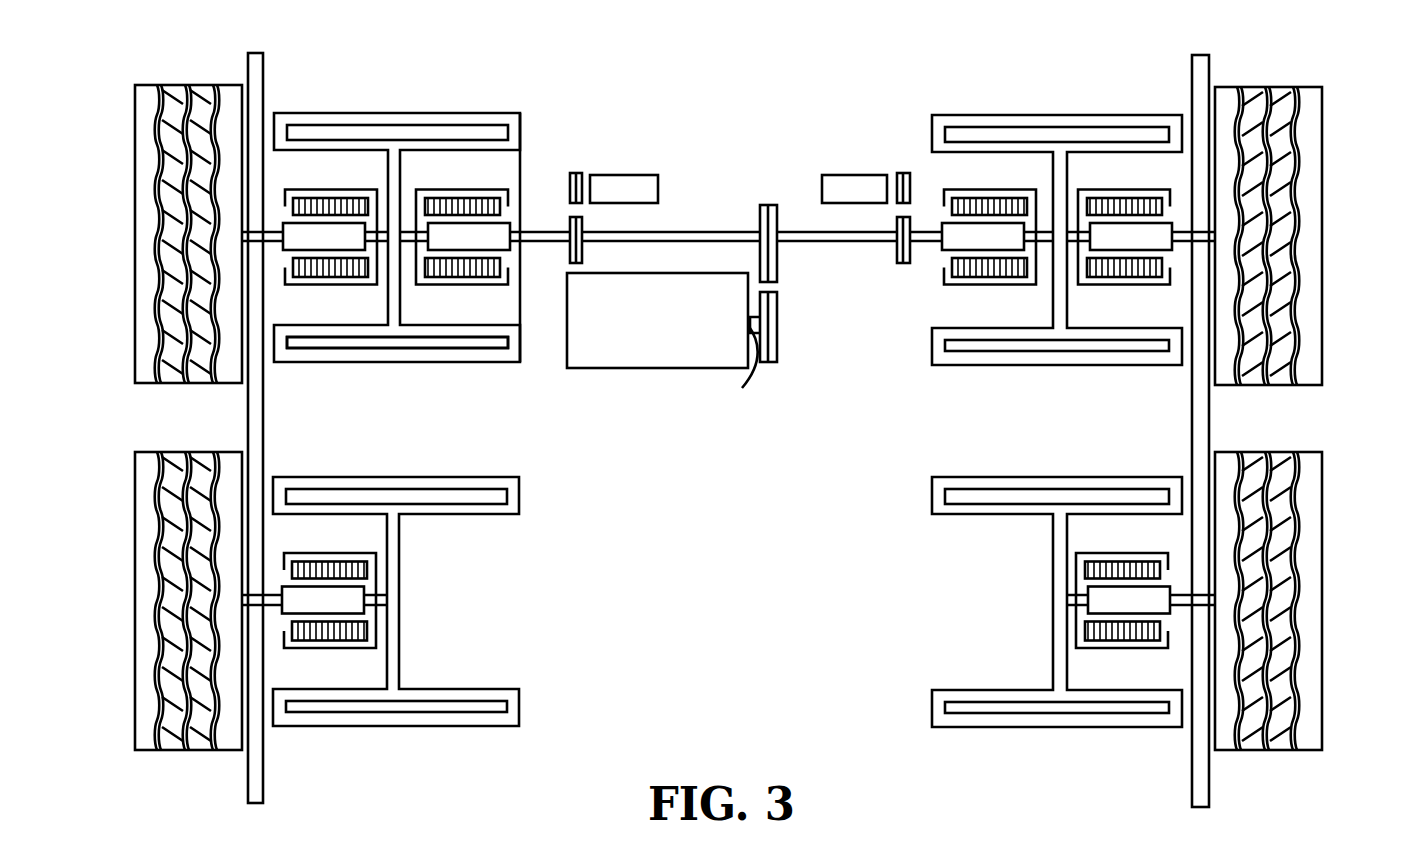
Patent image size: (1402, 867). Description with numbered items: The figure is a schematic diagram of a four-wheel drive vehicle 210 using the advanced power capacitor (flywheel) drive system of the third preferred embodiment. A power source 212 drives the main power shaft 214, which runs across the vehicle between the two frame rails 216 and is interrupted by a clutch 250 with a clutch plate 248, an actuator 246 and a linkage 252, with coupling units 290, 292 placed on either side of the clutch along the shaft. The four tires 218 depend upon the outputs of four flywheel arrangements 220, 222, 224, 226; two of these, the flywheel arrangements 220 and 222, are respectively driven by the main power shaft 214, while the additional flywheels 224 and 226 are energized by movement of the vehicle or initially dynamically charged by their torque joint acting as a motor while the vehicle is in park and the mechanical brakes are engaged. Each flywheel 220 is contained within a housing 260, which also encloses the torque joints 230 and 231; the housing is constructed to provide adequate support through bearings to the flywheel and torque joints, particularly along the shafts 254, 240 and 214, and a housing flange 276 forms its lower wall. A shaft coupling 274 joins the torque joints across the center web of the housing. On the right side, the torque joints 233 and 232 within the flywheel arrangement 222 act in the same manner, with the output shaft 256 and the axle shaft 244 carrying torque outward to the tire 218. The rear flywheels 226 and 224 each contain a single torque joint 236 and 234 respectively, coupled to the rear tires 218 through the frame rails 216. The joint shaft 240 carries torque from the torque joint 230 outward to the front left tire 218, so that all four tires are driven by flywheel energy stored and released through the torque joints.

The electric drive system 210 is at (722, 130).
The power source / engine unit 212 is at (645, 368).
The main power shaft 214 is at (673, 229).
The vehicle frame rail 216 is at (247, 72).
The tires 218 is at (132, 125).
The flywheel arrangement 220 is at (360, 112).
The flywheel arrangement 222 is at (1118, 115).
The flywheel 224 is at (1118, 477).
The flywheel 226 is at (358, 477).
The torque joint 230 is at (307, 190).
The torque joint 231 is at (485, 190).
The electric motor 232 is at (1123, 190).
The electric motor 233 is at (983, 190).
The electric motor 234 is at (1113, 553).
The electric motor 236 is at (312, 553).
The joint shaft 240 is at (262, 250).
The axle shaft 244 is at (1185, 250).
The clutch actuator 246 is at (776, 318).
The clutch plate 248 is at (775, 283).
The clutch 250 is at (762, 204).
The linkage 252 is at (725, 370).
The joint shaft 254 is at (381, 250).
The motor output shaft 256 is at (1077, 250).
The housing 260 is at (522, 160).
The shaft coupling 274 is at (403, 297).
The housing flange 276 is at (433, 350).
The coupling unit 290 is at (610, 173).
The coupling unit 292 is at (830, 175).